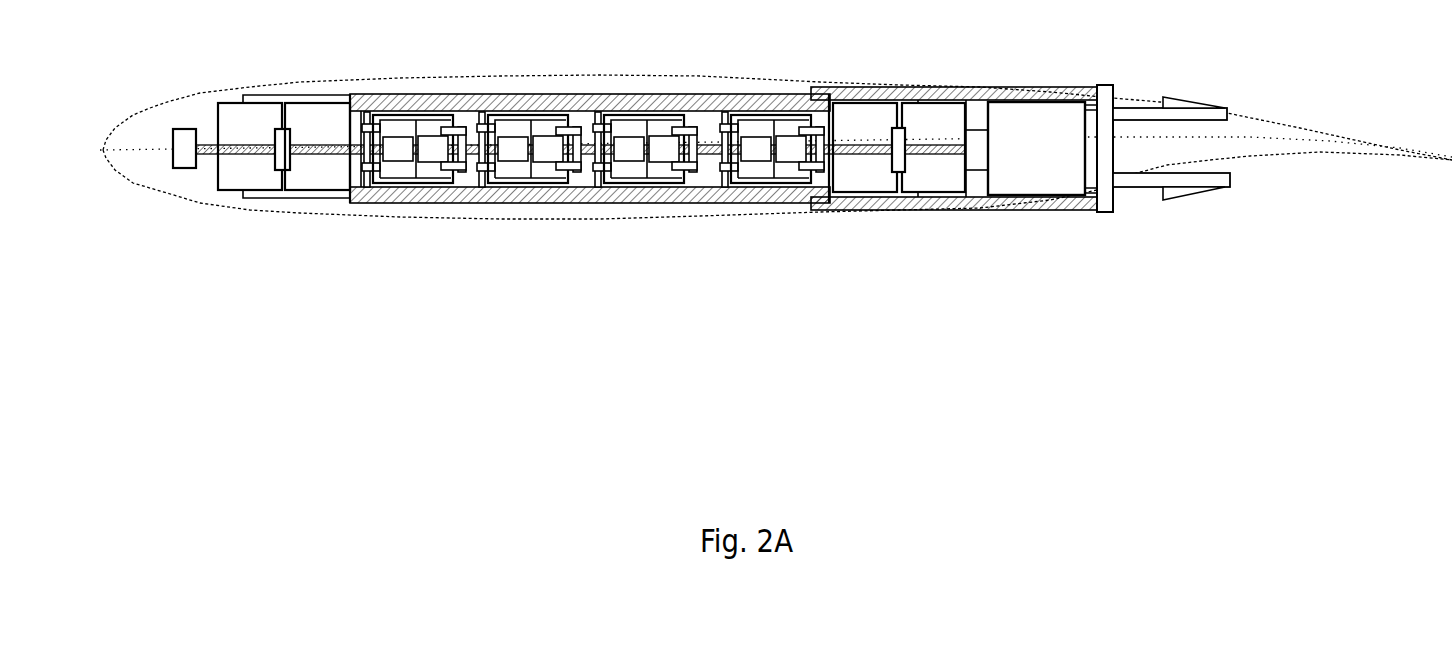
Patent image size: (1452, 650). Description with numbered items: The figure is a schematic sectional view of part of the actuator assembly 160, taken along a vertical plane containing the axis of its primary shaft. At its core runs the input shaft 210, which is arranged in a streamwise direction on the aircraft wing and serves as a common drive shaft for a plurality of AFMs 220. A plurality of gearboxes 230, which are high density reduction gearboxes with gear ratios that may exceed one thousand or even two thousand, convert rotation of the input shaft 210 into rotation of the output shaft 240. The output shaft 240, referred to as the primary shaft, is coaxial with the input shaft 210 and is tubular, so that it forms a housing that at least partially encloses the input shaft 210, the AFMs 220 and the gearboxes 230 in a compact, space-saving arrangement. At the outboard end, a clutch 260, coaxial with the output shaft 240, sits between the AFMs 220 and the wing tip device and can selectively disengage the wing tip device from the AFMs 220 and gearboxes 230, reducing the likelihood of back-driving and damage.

The actuator assembly 160 is at (252, 73).
The input shaft 210 is at (212, 152).
The AFMs 220 is at (313, 183).
The gearboxes 230 is at (512, 178).
The output shaft 240 is at (638, 196).
The clutch 260 is at (1033, 172).